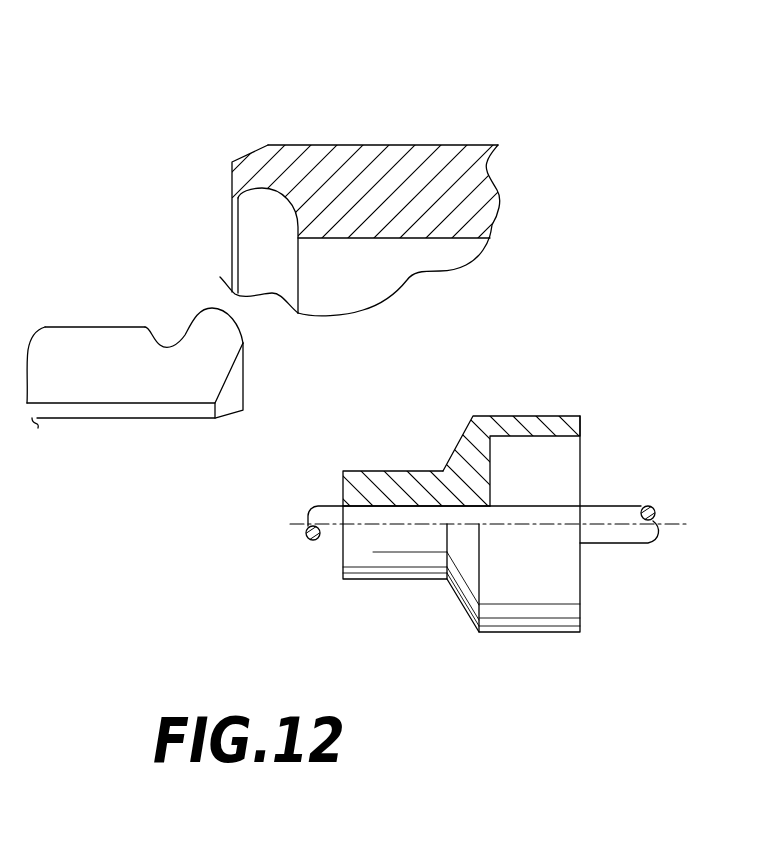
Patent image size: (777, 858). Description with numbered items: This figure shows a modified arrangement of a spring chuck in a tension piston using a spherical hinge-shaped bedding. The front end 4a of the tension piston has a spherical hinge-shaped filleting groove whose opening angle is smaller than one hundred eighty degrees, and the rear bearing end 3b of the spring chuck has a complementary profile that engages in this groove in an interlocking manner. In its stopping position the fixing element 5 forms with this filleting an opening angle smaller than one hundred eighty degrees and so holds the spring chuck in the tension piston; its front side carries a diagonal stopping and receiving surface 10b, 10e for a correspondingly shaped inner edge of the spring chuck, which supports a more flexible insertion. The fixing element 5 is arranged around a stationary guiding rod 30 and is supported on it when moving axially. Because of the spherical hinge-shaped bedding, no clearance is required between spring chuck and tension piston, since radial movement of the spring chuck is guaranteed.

The front end of the tension piston 4a is at (295, 173).
The rear bearing end of the spring chuck 3b is at (212, 337).
The diagonal stopping and receiving surface 10b is at (388, 470).
The diagonal stopping and receiving surface 10e is at (460, 462).
The guiding rod 30 is at (338, 538).
The fixing element 5 is at (513, 613).